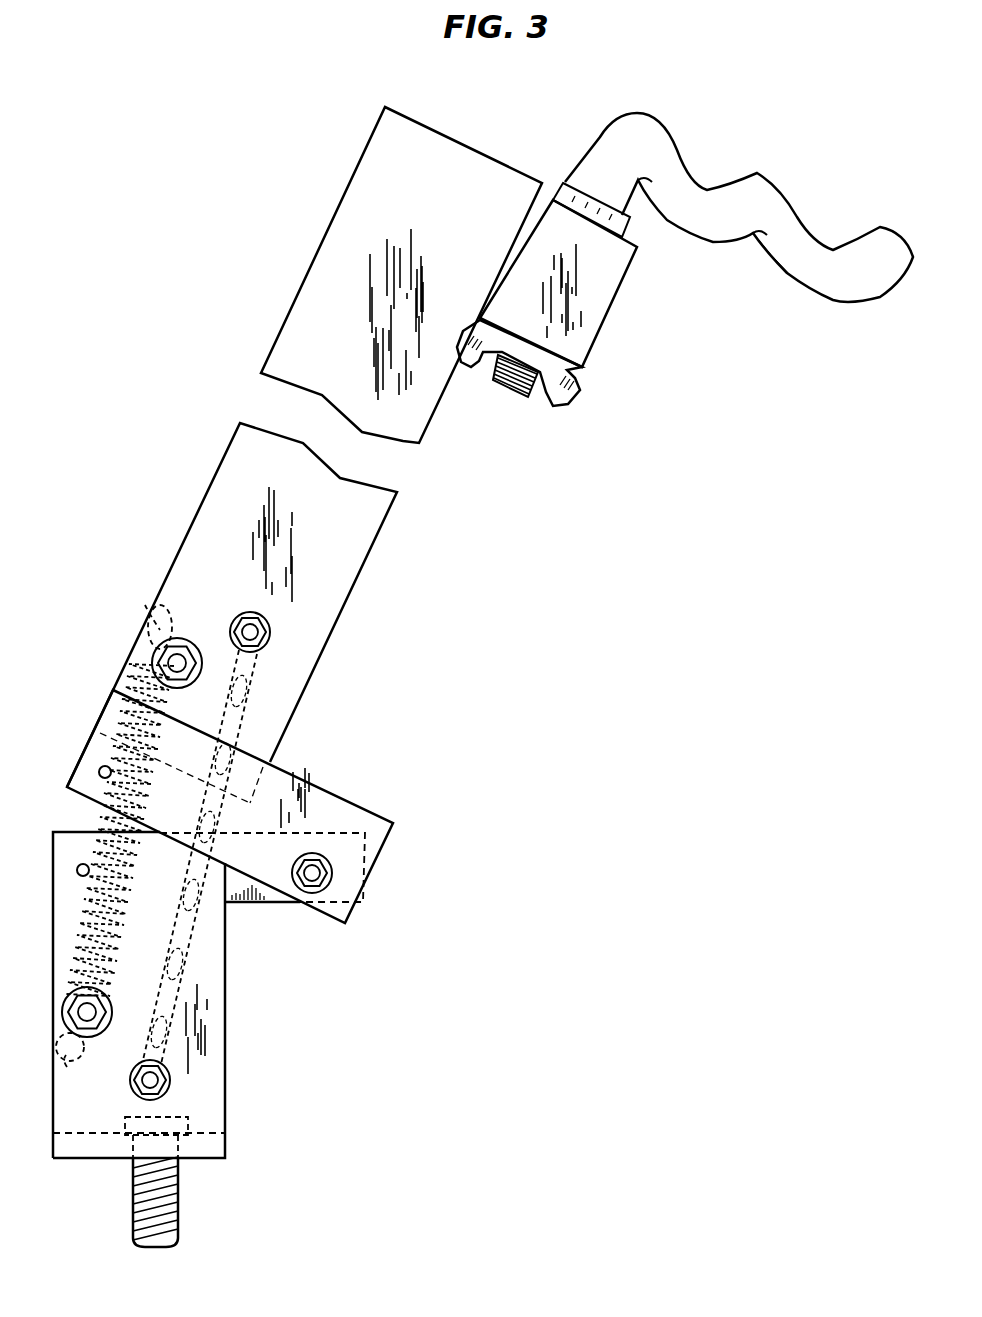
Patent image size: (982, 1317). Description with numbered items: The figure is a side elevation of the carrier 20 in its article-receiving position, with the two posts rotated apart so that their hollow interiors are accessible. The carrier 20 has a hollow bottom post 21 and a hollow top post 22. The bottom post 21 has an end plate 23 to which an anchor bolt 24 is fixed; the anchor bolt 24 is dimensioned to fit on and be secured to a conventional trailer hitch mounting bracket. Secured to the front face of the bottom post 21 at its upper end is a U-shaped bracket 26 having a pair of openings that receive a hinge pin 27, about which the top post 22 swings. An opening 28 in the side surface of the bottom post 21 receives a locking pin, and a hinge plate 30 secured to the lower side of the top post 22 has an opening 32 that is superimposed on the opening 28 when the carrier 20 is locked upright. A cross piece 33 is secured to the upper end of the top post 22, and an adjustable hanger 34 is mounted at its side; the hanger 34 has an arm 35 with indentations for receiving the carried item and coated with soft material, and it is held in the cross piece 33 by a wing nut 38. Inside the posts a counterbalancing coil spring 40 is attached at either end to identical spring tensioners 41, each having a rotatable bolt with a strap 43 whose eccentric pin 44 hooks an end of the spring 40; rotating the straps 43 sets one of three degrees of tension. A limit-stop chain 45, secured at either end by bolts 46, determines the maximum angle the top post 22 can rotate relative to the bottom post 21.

The carrier 20 is at (207, 265).
The hollow bottom post 21 is at (212, 1043).
The hollow top post 22 is at (343, 567).
The end plate 23 is at (213, 1150).
The anchor bolt 24 is at (133, 1210).
The U-shaped bracket 26 is at (353, 843).
The hinge pin 27 is at (310, 880).
The opening 28 is at (80, 865).
The hinge plate 30 is at (323, 810).
The opening 32 is at (100, 770).
The cross piece 33 is at (597, 330).
The adjustable hanger 34 is at (773, 200).
The arm 35 is at (793, 273).
The wing nut 38 is at (565, 395).
The coil spring 40 is at (110, 687).
The spring tensioner 41 is at (157, 658).
The strap 43 is at (145, 605).
The eccentric pin 44 is at (173, 617).
The limit-stop chain 45 is at (233, 707).
The bolt 46 is at (253, 633).